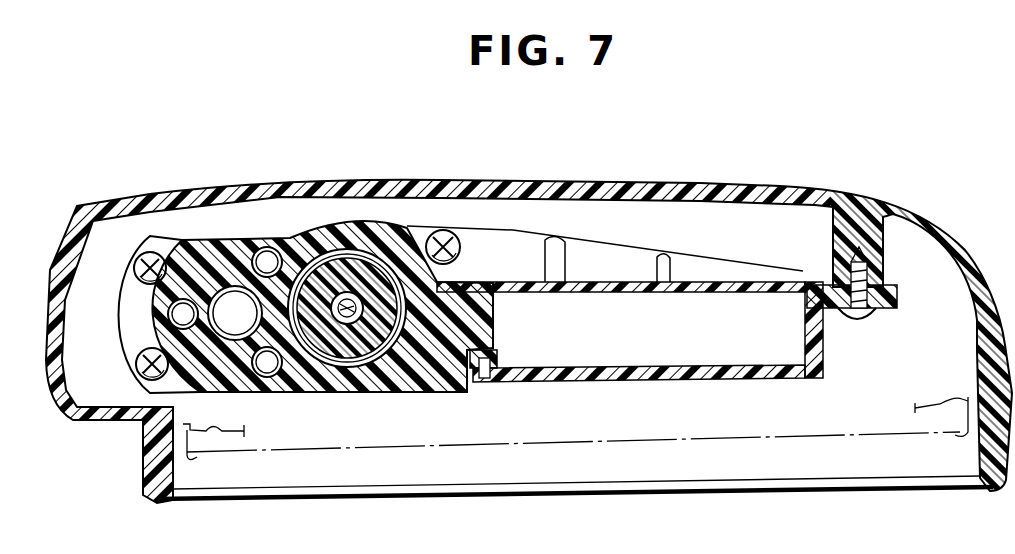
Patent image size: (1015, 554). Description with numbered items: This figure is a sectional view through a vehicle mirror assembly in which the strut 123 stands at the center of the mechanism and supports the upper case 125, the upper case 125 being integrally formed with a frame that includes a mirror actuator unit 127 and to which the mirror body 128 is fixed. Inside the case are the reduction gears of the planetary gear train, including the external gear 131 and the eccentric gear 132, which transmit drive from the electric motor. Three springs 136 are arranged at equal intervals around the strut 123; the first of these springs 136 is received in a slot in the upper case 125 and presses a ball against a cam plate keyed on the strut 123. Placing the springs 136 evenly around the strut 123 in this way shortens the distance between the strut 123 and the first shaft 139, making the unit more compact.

The strut 123 is at (232, 286).
The upper case 125 is at (358, 232).
The mirror actuator unit 127 is at (737, 348).
The mirror body 128 is at (603, 181).
The external gear 131 is at (404, 352).
The eccentric gear 132 is at (357, 298).
The springs 136 is at (270, 247).
The first shaft 139 is at (351, 352).